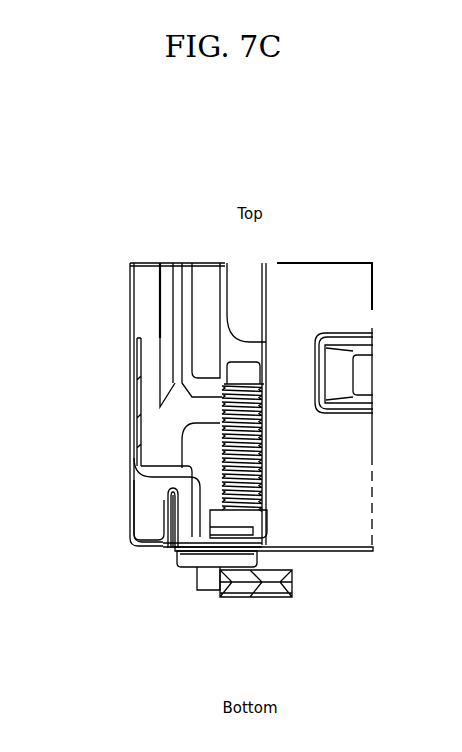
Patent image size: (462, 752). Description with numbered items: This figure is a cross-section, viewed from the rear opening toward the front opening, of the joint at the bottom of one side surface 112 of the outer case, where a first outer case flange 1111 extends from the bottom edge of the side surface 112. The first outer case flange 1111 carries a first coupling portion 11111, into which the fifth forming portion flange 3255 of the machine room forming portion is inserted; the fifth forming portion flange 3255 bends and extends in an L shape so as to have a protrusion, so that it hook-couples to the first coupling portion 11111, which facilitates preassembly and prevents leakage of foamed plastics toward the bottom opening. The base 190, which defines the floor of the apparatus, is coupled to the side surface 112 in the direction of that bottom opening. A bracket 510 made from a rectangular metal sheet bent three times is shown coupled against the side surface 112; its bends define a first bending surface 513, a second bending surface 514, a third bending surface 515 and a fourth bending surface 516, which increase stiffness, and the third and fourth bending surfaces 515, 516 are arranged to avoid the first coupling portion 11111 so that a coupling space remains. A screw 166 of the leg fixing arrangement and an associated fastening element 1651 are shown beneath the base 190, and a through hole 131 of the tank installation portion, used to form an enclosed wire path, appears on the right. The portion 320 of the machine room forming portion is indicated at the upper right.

The side surface of outer case 112 is at (128, 293).
The cover 320 is at (262, 293).
The first tank installation portion through hole 131 is at (363, 385).
The first bracket 510 is at (131, 373).
The first bending surface 513 is at (137, 411).
The second bending surface 514 is at (163, 470).
The first coupling portion 11111 is at (170, 513).
The first outer case flange 1111 is at (142, 547).
The base 190 is at (322, 553).
The fifth forming portion flange 3255 is at (175, 550).
The fastening shaft 1651 is at (210, 556).
The first screw 166 is at (282, 568).
The fourth bending surface 516 is at (240, 540).
The third bending surface 515 is at (195, 503).